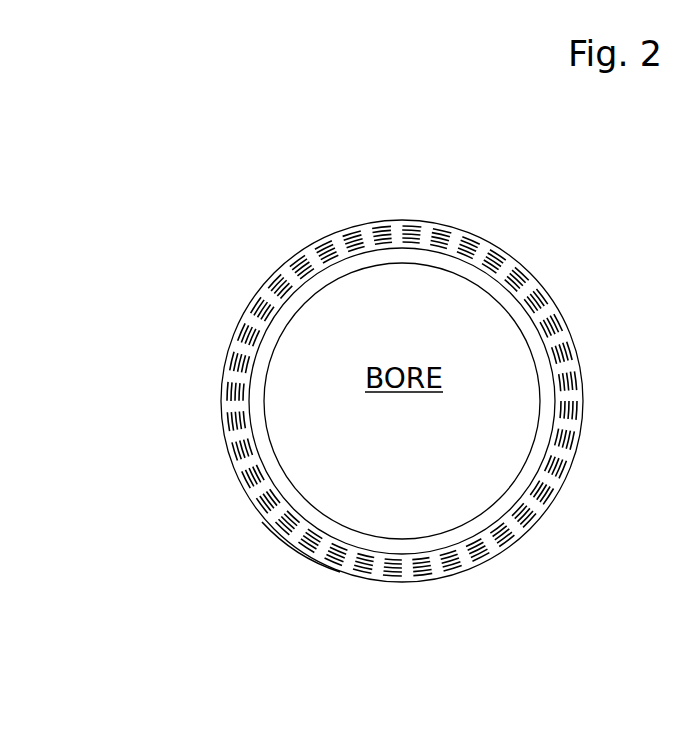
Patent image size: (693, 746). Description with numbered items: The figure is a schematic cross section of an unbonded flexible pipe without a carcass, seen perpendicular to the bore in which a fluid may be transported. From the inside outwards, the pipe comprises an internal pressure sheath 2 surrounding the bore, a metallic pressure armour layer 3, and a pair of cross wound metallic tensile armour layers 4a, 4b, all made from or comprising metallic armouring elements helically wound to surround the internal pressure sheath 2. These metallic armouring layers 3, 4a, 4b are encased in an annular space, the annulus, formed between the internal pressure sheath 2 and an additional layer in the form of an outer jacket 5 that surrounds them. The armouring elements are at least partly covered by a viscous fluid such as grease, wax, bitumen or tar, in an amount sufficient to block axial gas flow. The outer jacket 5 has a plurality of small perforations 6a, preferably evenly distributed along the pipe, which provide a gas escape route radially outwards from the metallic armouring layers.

The internal pressure sheath 2 is at (268, 346).
The metallic pressure armour layer 3 is at (487, 540).
The first metallic tensile armour layer 4a is at (303, 265).
The second metallic tensile armour layer 4b is at (266, 287).
The outer jacket 5 is at (218, 373).
The perforations 6a is at (338, 570).